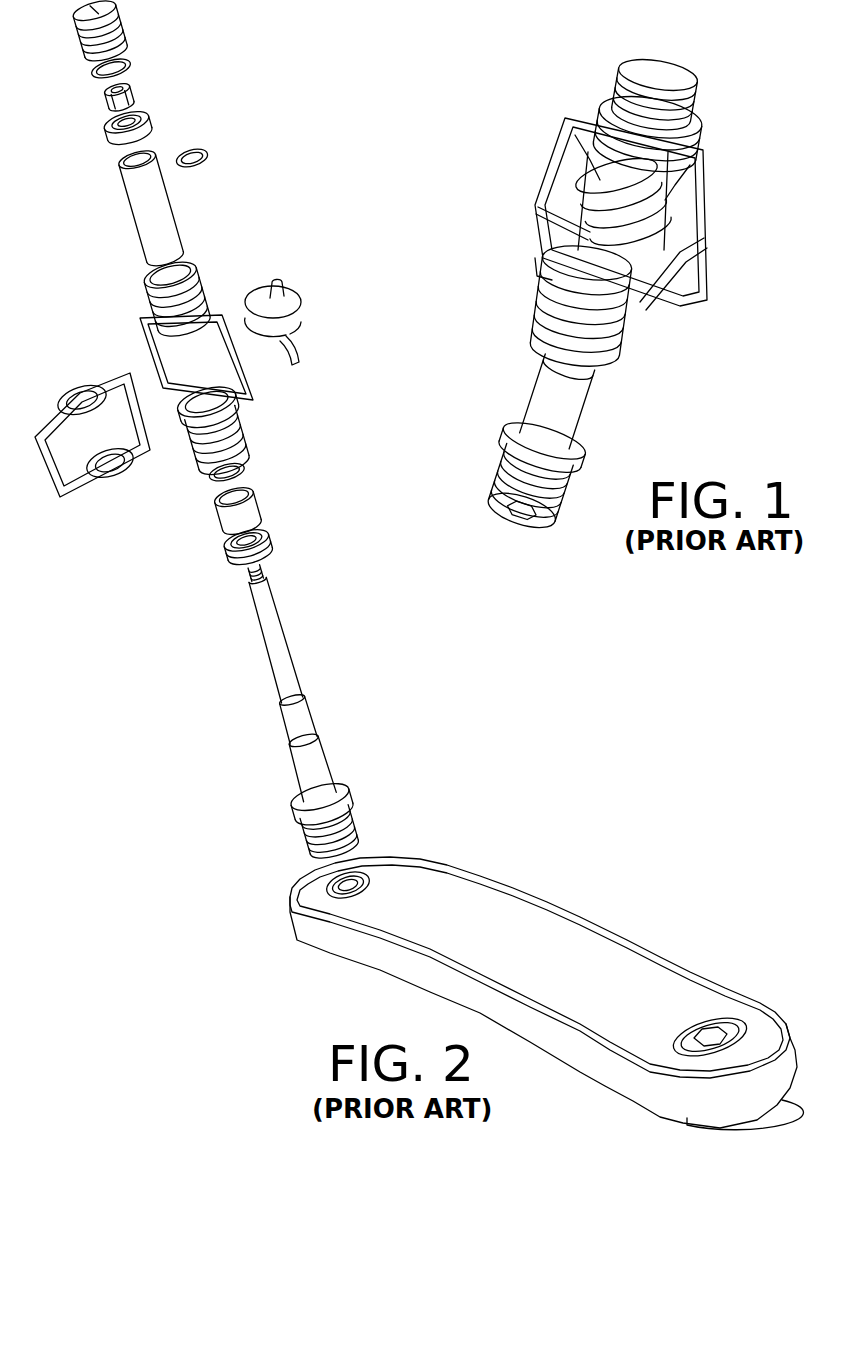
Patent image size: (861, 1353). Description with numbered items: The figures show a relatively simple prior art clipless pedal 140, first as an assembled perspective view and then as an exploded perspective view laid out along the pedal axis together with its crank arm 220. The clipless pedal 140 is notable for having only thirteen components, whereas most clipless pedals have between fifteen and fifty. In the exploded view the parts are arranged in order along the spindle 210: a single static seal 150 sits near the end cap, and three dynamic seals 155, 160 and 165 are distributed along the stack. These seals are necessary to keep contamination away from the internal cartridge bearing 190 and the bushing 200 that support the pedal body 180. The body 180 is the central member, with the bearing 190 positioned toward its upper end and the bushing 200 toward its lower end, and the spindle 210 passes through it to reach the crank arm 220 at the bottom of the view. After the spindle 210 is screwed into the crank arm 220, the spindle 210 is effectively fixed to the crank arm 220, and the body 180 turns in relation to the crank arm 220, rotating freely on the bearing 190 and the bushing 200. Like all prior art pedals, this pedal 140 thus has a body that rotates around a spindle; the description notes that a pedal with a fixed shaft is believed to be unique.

In FIG. 1, the prior art clipless pedal 140 is at (712, 132).
In FIG. 2, the static seal 150 is at (132, 55).
In FIG. 2, the dynamic seal 155 is at (200, 147).
In FIG. 2, the dynamic seal 160 is at (253, 468).
In FIG. 2, the dynamic seal 165 is at (273, 547).
In FIG. 2, the body 180 is at (214, 305).
In FIG. 2, the internal cartridge bearing 190 is at (115, 140).
In FIG. 2, the bushing 200 is at (227, 517).
In FIG. 2, the spindle 210 is at (285, 635).
In FIG. 2, the crank arm 220 is at (503, 905).